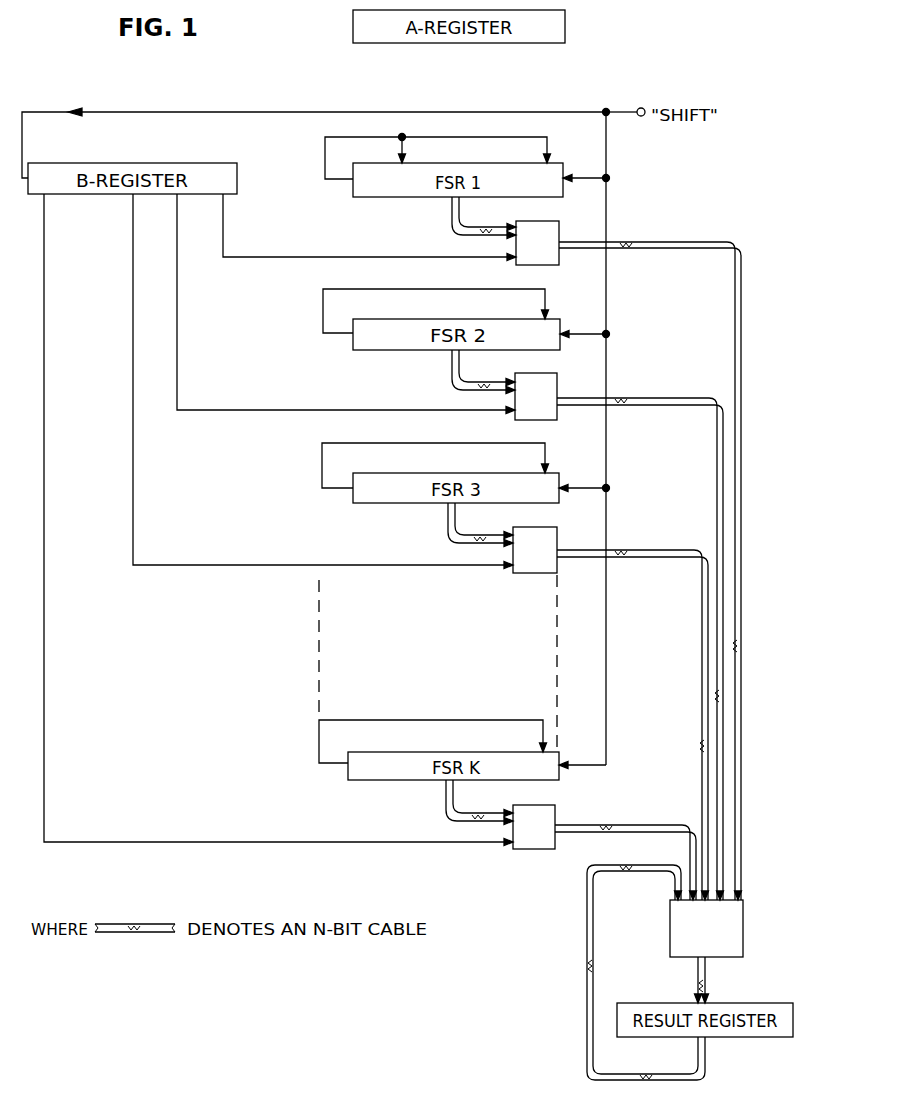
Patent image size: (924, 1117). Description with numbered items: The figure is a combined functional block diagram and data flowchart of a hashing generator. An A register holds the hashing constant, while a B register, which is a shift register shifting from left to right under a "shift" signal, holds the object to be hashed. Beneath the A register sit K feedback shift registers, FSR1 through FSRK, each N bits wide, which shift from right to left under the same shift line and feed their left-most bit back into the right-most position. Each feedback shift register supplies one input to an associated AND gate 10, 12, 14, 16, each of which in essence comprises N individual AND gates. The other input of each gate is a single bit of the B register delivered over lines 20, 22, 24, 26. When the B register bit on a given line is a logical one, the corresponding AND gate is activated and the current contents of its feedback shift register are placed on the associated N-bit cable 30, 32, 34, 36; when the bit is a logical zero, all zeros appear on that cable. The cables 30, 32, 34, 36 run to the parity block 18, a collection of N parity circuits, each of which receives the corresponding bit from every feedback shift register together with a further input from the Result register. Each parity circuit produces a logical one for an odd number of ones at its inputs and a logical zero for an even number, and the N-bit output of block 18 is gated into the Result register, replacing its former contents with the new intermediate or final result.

The AND gate 10 is at (557, 230).
The AND gate 12 is at (557, 386).
The AND gate 14 is at (557, 540).
The AND gate 16 is at (555, 818).
The parity block 18 is at (670, 928).
The line from B register 20 is at (246, 257).
The line from B register 22 is at (245, 410).
The line from B register 24 is at (216, 565).
The line from B register 26 is at (170, 842).
The N-bit cable 30 is at (665, 246).
The N-bit cable 32 is at (655, 398).
The N-bit cable 34 is at (648, 550).
The N-bit cable 36 is at (630, 826).